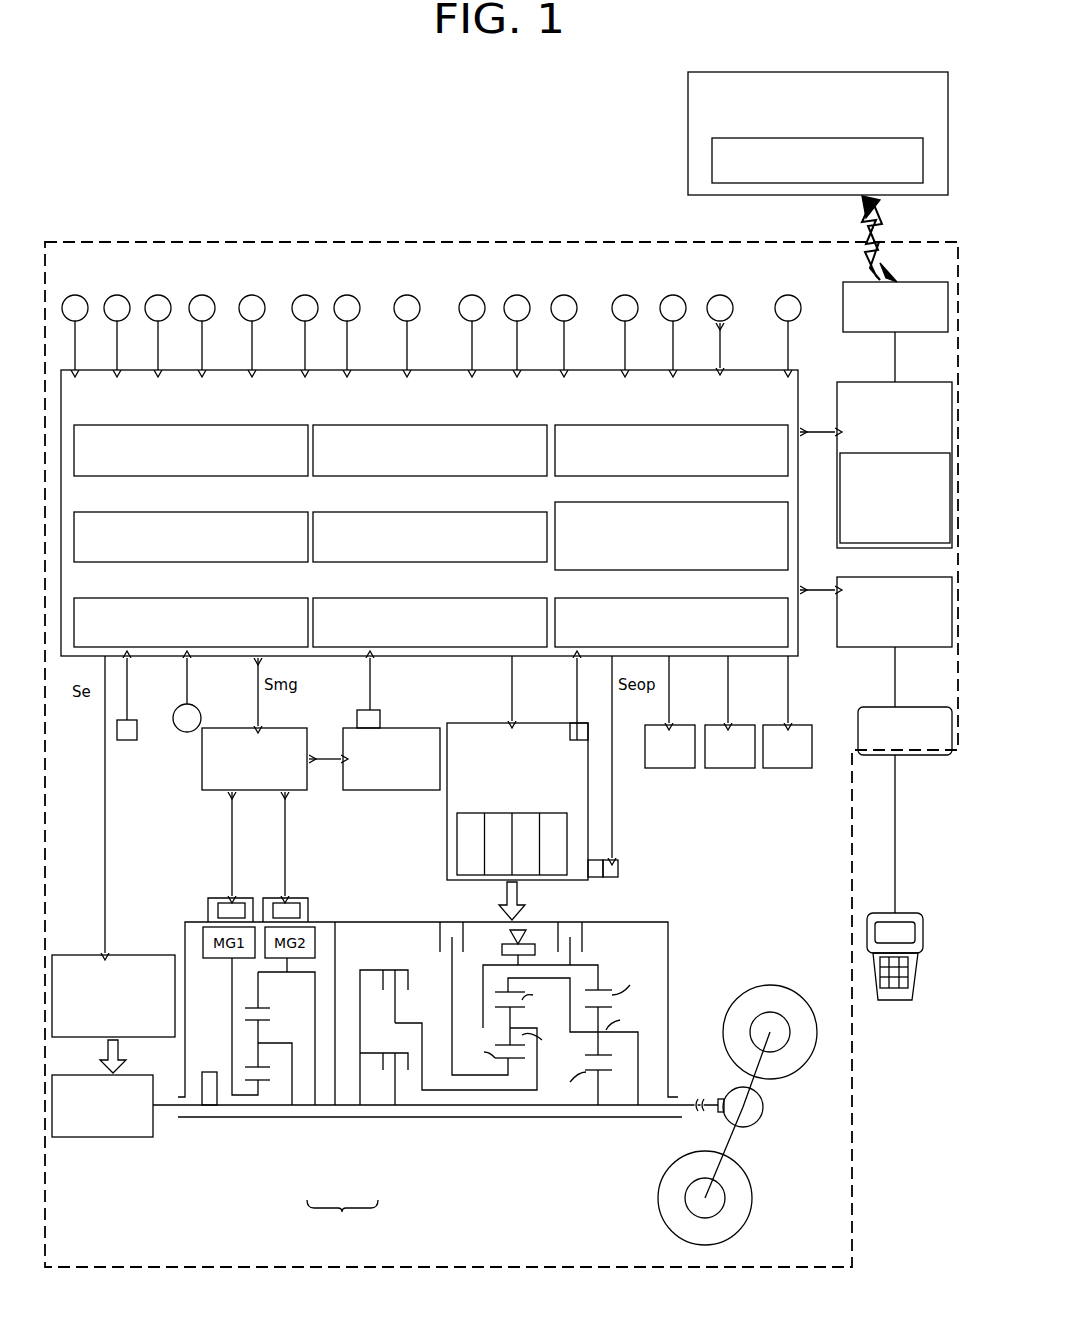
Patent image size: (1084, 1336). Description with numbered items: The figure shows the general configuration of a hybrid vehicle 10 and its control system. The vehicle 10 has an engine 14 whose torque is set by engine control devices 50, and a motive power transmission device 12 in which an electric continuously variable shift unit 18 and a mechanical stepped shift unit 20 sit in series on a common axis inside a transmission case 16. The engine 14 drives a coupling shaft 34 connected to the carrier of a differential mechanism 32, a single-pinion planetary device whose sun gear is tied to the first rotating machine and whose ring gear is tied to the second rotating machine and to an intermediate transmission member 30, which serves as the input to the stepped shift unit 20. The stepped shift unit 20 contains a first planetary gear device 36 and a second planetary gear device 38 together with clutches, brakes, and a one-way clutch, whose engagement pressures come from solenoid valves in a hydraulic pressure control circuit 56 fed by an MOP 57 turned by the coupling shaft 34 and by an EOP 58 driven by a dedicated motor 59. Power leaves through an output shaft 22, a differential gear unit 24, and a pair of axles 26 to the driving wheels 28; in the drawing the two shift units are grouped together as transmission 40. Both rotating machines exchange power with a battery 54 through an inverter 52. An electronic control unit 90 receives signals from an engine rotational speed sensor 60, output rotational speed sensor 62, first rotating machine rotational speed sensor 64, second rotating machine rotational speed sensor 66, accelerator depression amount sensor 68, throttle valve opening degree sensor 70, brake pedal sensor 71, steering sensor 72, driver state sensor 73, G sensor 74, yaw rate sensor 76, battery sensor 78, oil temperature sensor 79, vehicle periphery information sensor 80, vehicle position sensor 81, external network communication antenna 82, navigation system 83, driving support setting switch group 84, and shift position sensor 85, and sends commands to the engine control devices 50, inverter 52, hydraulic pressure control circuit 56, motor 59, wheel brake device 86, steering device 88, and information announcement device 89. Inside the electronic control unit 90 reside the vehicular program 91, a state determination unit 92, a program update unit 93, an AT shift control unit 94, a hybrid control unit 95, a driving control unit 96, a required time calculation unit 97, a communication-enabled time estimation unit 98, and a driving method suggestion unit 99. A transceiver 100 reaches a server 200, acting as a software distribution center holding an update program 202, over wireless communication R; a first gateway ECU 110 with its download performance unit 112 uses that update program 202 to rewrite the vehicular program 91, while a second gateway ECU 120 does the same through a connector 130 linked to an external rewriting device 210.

The vehicle 10 is at (199, 242).
The motive power transmission device 12 is at (170, 1205).
The engine 14 is at (126, 1075).
The transmission case 16 is at (370, 922).
The electric continuously variable shift unit 18 is at (290, 1160).
The mechanical stepped shift unit 20 is at (400, 1160).
The output shaft 22 is at (681, 1118).
The differential gear unit 24 is at (755, 1110).
The axles 26 is at (762, 1087).
The driving wheels 28 is at (790, 1008).
The intermediate transmission member 30 is at (325, 1108).
The differential mechanism 32 is at (252, 1130).
The coupling shaft 34 is at (160, 1120).
The first planetary gear device 36 is at (505, 1125).
The second planetary gear device 38 is at (598, 1125).
The transmission 40 is at (342, 1220).
The engine control devices 50 is at (120, 956).
The inverter 52 is at (283, 791).
The battery 54 is at (378, 791).
The hydraulic pressure control circuit 56 is at (455, 723).
The MOP 57 is at (208, 1072).
The EOP 58 is at (598, 878).
The motor 59 is at (618, 878).
The engine rotational speed sensor 60 is at (78, 312).
The output rotational speed sensor 62 is at (120, 312).
The MG1 rotational speed sensor 64 is at (161, 312).
The MG2 rotational speed sensor 66 is at (205, 312).
The accelerator depression amount sensor 68 is at (255, 312).
The throttle valve opening degree sensor 70 is at (308, 312).
The brake pedal sensor 71 is at (350, 312).
The steering sensor 72 is at (410, 312).
The driver state sensor 73 is at (475, 312).
The G sensor 74 is at (520, 312).
The yaw rate sensor 76 is at (567, 312).
The battery sensor 78 is at (380, 722).
The oil temperature sensor 79 is at (568, 724).
The vehicle periphery information sensor 80 is at (628, 312).
The vehicle position sensor 81 is at (676, 312).
The external network communication antenna 82 is at (723, 312).
The navigation system 83 is at (791, 312).
The driving support setting switch group 84 is at (127, 742).
The shift position sensor 85 is at (187, 733).
The wheel brake device 86 is at (672, 768).
The steering device 88 is at (733, 768).
The information announcement device 89 is at (790, 768).
The electronic control unit 90 is at (795, 607).
The vehicular program 91 is at (245, 425).
The state determination unit 92 is at (245, 512).
The program update unit 93 is at (245, 598).
The AT shift control unit 94 is at (484, 425).
The hybrid control unit 95 is at (484, 512).
The driving control unit 96 is at (484, 598).
The required time calculation unit 97 is at (723, 425).
The communication-enabled time estimation unit 98 is at (723, 502).
The driving method suggestion unit 99 is at (723, 598).
The transceiver 100 is at (918, 333).
The first gateway ECU 110 is at (837, 386).
The download performance unit 112 is at (928, 548).
The second gateway ECU 120 is at (900, 648).
The connector 130 is at (898, 708).
The server 200 is at (702, 133).
The update program 202 is at (818, 184).
The external rewriting device 210 is at (905, 925).
The wireless communication R is at (892, 224).